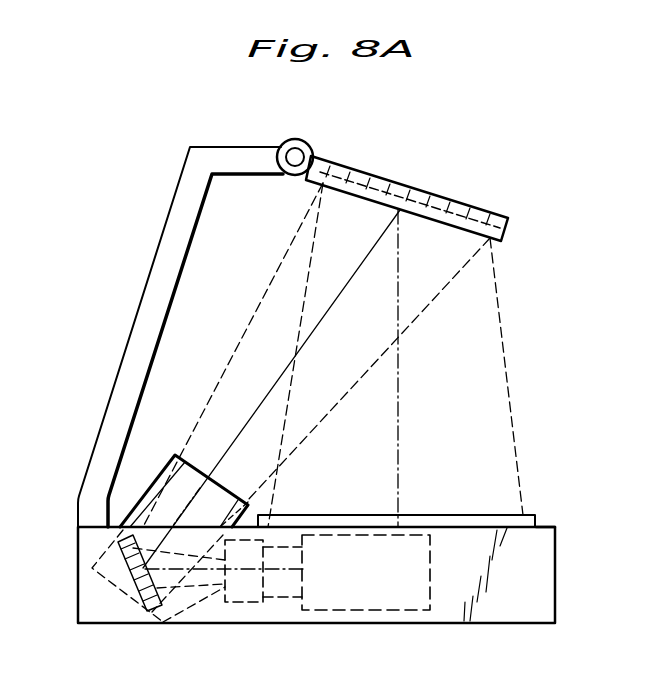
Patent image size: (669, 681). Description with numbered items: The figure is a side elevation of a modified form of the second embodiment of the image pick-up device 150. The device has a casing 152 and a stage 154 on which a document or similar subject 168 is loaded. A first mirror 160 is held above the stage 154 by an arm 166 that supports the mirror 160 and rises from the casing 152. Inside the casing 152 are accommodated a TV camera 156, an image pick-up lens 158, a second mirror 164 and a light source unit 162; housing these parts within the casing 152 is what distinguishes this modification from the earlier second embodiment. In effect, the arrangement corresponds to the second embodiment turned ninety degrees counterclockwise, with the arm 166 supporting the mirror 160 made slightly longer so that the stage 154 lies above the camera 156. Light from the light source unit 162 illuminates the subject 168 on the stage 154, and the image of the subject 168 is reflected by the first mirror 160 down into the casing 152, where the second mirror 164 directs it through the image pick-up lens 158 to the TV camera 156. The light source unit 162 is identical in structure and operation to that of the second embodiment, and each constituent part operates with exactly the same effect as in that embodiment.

The image pick-up device 150 is at (571, 234).
The casing 152 is at (508, 612).
The stage 154 is at (543, 527).
The TV camera 156 is at (372, 604).
The image pick-up lens 158 is at (243, 601).
The first mirror 160 is at (396, 184).
The light source unit 162 is at (152, 506).
The second mirror 164 is at (140, 626).
The arm 166 is at (146, 316).
The document or similar subject 168 is at (456, 515).